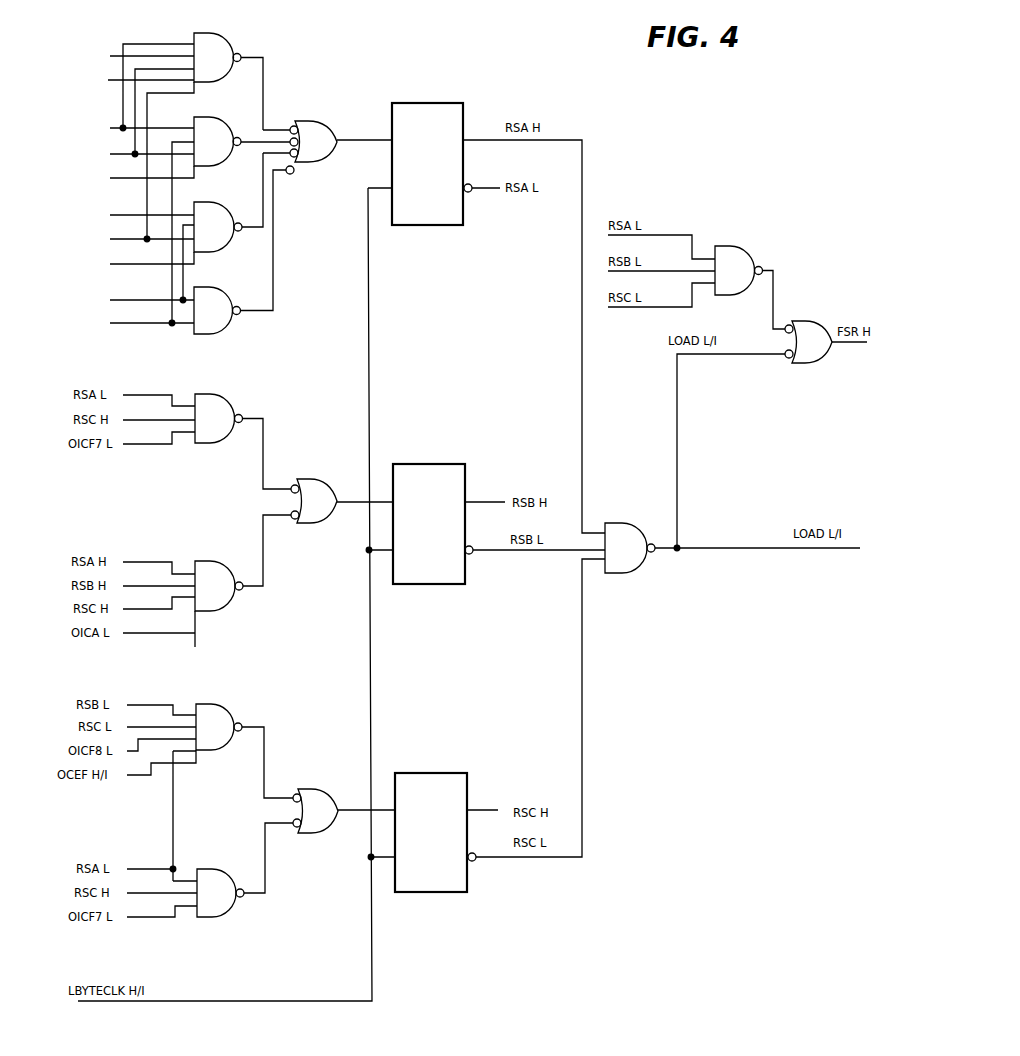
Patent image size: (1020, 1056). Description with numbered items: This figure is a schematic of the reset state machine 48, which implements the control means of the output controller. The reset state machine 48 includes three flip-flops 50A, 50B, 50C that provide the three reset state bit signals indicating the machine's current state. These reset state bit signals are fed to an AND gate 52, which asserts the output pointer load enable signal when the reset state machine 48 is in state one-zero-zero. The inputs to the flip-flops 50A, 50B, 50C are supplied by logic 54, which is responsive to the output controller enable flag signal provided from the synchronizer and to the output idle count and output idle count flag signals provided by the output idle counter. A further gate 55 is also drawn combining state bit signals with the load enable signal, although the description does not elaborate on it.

The reset state machine 48 is at (482, 457).
The flip-flop 50A is at (430, 117).
The flip-flop 50B is at (432, 477).
The flip-flop 50C is at (433, 785).
The AND gate 52 is at (629, 573).
The logic 54 is at (340, 77).
The NOR gate producing FSR H signal 55 is at (758, 366).